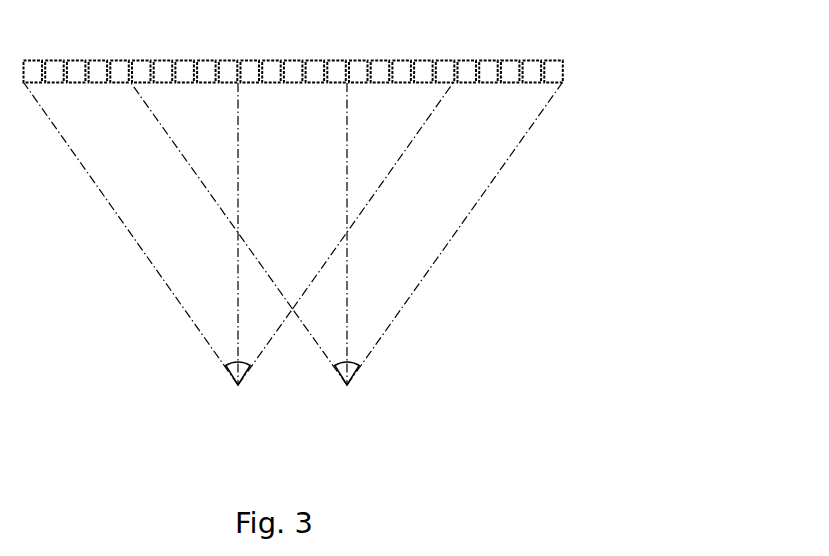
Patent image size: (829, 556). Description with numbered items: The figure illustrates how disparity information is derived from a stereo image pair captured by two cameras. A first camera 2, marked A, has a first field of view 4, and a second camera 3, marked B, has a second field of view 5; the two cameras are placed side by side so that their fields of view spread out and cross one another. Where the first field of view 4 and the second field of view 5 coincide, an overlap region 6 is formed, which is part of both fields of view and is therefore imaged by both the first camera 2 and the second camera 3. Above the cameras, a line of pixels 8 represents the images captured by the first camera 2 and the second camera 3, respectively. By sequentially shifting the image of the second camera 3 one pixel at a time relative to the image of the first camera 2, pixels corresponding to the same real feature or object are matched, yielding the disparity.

The first camera 2 is at (227, 412).
The second camera 3 is at (355, 417).
The first field of view 4 is at (170, 243).
The second field of view 5 is at (413, 242).
The overlap region 6 is at (295, 245).
The line of pixels 8 is at (579, 70).